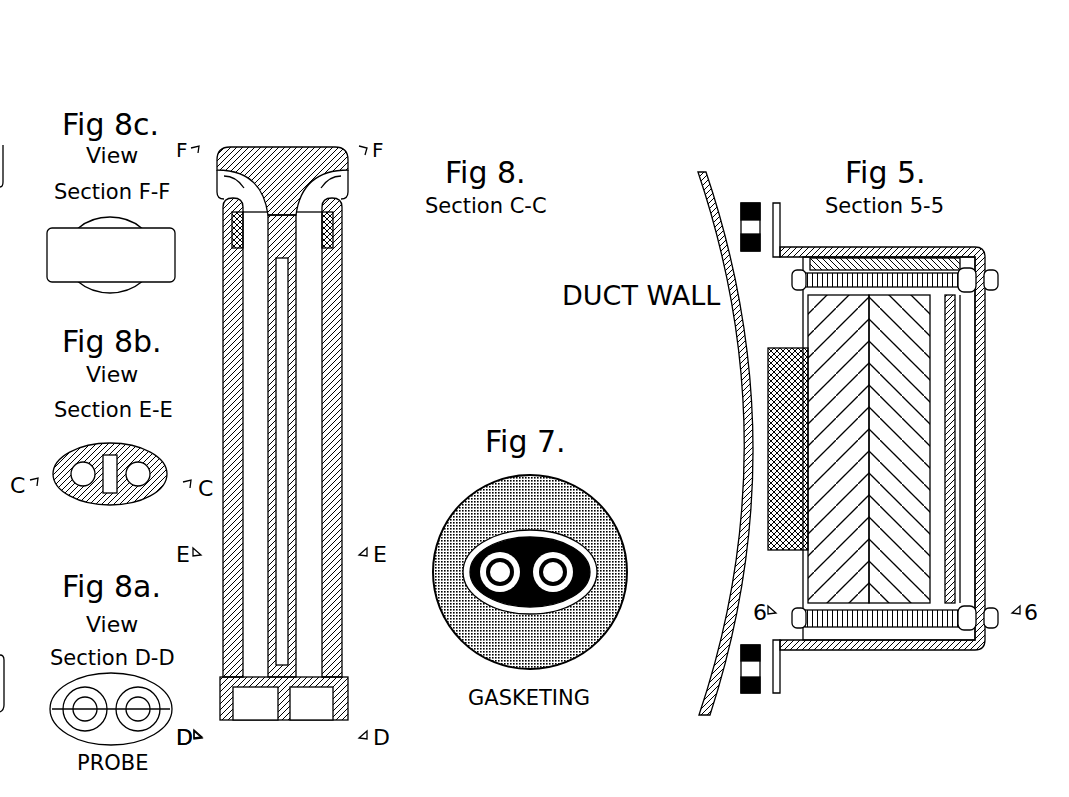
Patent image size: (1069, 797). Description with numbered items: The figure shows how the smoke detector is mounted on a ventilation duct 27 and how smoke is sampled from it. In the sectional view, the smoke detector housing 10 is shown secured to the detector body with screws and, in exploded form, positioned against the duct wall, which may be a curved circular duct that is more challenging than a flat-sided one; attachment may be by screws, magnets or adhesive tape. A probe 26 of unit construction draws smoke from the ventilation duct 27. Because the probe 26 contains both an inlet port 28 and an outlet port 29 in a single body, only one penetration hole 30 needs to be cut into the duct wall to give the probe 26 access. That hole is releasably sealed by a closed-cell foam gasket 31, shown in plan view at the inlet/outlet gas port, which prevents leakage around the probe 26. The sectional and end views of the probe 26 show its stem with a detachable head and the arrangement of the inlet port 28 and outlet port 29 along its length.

In FIG. 8C, the probe 26 is at (111, 255).
In FIG. 8B, the probe 26 is at (68, 492).
In FIG. 8A, the probe 26 is at (58, 697).
In FIG. 8, the probe 26 is at (342, 372).
In FIG. 8B, the inlet port 28 is at (142, 474).
In FIG. 8, the inlet port 28 is at (338, 176).
In FIG. 8B, the outlet port 29 is at (78, 470).
In FIG. 8, the outlet port 29 is at (228, 175).
In FIG. 5, the ventilation duct 27 is at (718, 198).
In FIG. 5, the smoke detector housing 10 is at (908, 248).
In FIG. 5, the penetration hole 30 is at (743, 452).
In FIG. 5, the gasket 31 is at (790, 350).